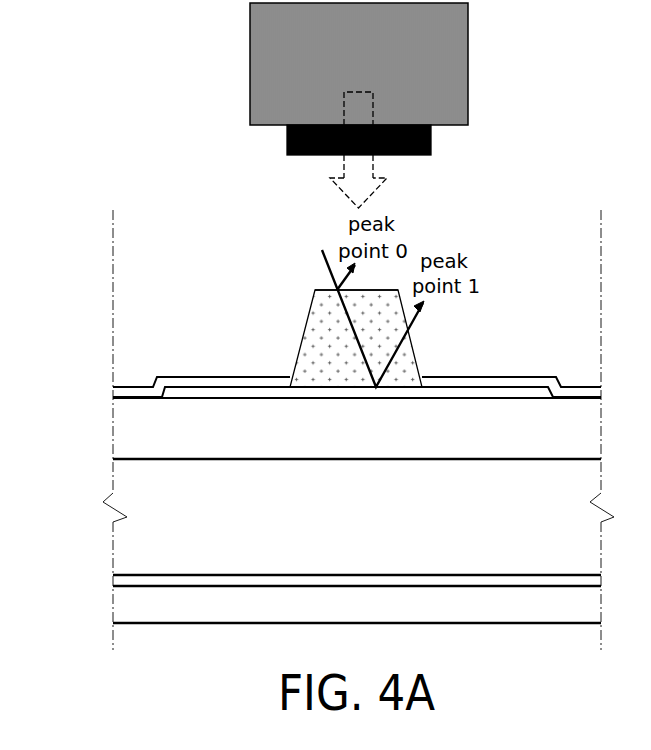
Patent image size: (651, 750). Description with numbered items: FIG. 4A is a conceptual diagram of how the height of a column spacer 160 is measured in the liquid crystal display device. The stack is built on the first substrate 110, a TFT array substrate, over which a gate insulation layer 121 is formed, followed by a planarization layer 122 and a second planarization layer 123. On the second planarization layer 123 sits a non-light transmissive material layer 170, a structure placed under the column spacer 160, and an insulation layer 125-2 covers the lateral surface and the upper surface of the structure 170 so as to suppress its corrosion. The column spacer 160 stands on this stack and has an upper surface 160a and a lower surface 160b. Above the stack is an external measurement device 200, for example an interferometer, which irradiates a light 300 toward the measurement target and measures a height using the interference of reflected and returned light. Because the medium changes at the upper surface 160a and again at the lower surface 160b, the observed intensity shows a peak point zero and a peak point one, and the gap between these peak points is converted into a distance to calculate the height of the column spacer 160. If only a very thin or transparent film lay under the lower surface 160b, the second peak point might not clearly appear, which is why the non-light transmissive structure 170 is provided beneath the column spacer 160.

The first substrate 110 is at (143, 607).
The gate insulation layer 121 is at (143, 581).
The planarization layer 122 is at (143, 525).
The second planarization layer 123 is at (143, 443).
The insulation layer 125-2 is at (123, 393).
The column spacer 160 is at (320, 335).
The upper surface of the column spacer 160a is at (322, 290).
The lower surface of the column spacer 160b is at (308, 385).
The non-light transmissive material layer 170 is at (182, 392).
The external measurement device 200 is at (454, 83).
The laser beam 300 is at (377, 192).